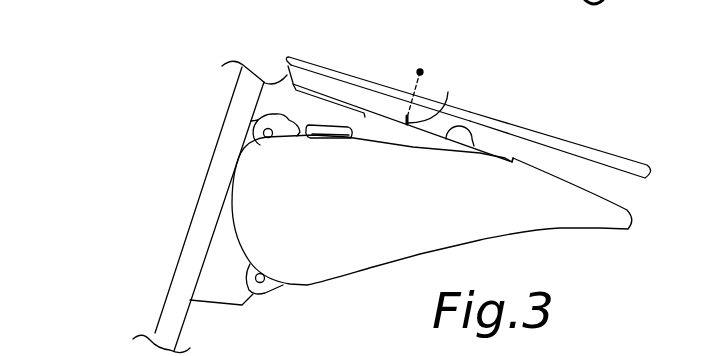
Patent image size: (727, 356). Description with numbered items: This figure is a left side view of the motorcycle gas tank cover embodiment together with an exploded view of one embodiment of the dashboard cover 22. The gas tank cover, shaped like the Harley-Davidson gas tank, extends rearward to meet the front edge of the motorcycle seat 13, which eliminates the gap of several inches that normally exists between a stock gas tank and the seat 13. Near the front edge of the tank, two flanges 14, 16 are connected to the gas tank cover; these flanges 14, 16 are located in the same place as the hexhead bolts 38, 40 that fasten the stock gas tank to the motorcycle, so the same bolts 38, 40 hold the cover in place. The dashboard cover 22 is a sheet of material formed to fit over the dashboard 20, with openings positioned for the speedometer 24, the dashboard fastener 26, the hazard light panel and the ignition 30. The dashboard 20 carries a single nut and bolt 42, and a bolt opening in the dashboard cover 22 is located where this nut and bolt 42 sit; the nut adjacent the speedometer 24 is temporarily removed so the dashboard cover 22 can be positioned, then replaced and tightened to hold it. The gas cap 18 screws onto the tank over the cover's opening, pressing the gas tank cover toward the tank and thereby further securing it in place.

The motorcycle seat 13 is at (519, 224).
The flange 14 is at (258, 146).
The flange 16 is at (247, 276).
The gas cap 18 is at (338, 127).
The dashboard 20 is at (368, 128).
The dashboard cover 22 is at (547, 142).
The speedometer 24 is at (301, 77).
The dashboard fastener 26 is at (423, 67).
The ignition 30 is at (467, 133).
The bolt 38 is at (259, 126).
The bolt 40 is at (265, 292).
The bolt 42 is at (440, 96).